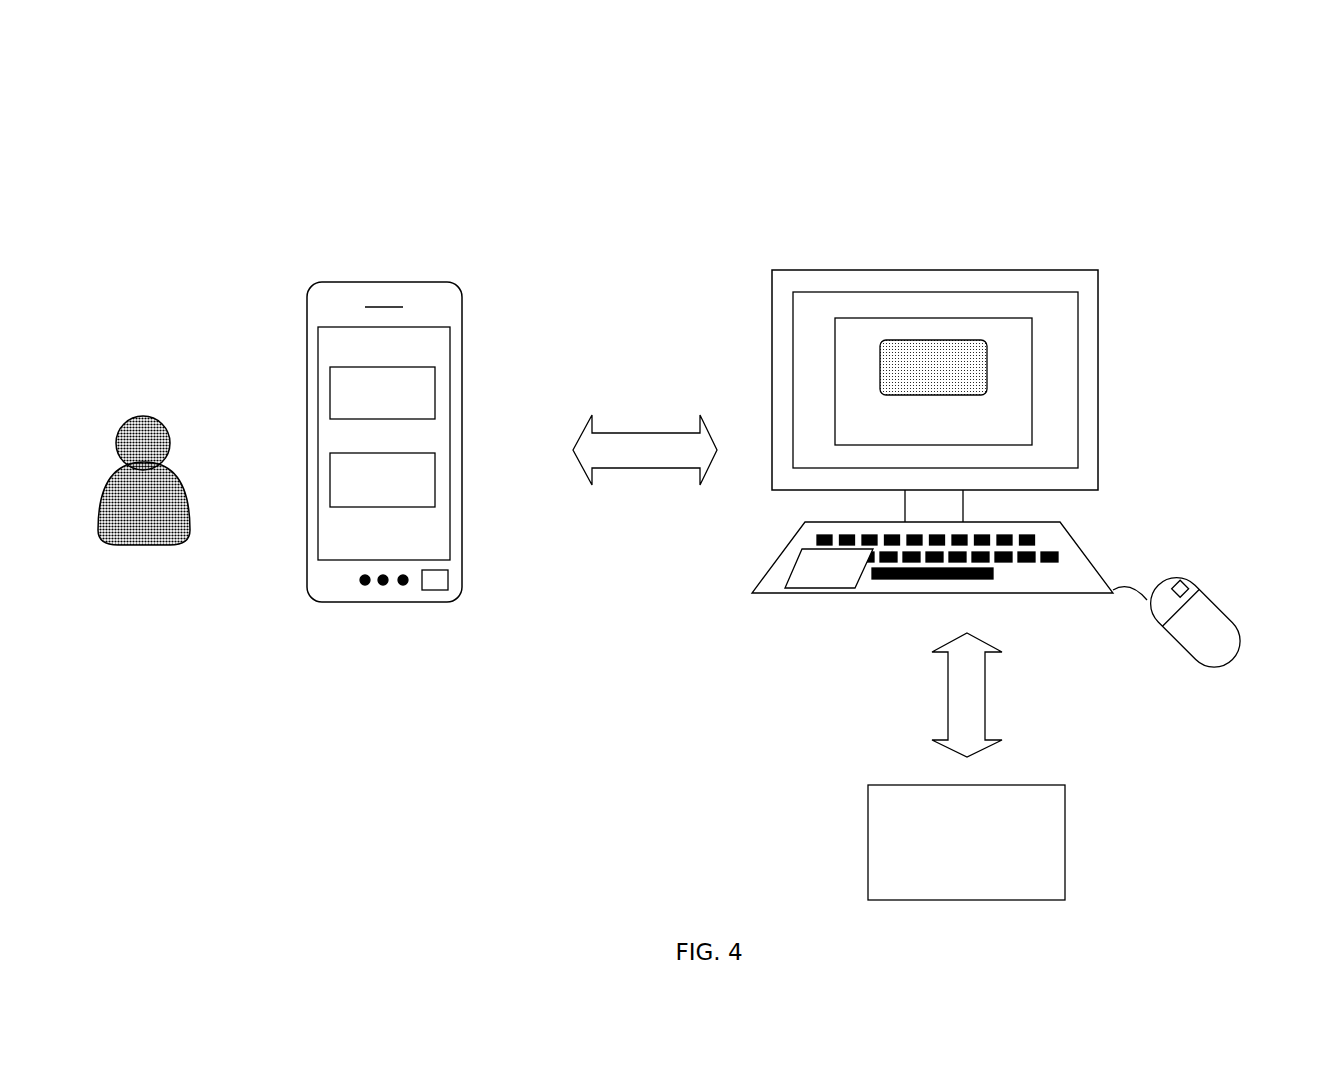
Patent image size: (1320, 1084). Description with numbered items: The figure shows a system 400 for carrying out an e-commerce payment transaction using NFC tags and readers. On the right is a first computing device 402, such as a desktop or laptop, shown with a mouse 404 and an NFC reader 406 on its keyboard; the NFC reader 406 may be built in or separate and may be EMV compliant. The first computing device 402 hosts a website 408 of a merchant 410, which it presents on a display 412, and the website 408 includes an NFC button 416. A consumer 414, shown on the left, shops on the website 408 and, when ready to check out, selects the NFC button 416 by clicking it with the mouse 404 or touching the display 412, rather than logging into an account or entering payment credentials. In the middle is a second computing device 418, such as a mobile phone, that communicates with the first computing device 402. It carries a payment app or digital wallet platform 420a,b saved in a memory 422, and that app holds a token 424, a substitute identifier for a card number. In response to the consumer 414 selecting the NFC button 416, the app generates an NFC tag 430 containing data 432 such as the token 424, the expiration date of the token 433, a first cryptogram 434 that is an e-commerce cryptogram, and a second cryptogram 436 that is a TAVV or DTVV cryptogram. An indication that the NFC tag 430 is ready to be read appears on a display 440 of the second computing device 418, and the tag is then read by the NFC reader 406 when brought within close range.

The system 400 is at (1170, 87).
The first computing device 402 is at (1052, 252).
The mouse 404 is at (1230, 617).
The NFC reader 406 is at (795, 563).
The website 408 is at (1033, 382).
The merchant 410 is at (966, 842).
The display 412 is at (1058, 430).
The consumer 414 is at (142, 412).
The NFC button 416 is at (880, 367).
The second computing device 418 is at (417, 250).
The payment app or digital wallet platform 420a,b is at (432, 345).
The memory 422 is at (435, 590).
The token 424 is at (407, 507).
The NFC tag 430 is at (328, 367).
The data 432 is at (378, 357).
The expiration date of the token 433 is at (719, 133).
The first cryptogram 434 is at (568, 160).
The second cryptogram 436 is at (723, 160).
The display 440 is at (345, 535).